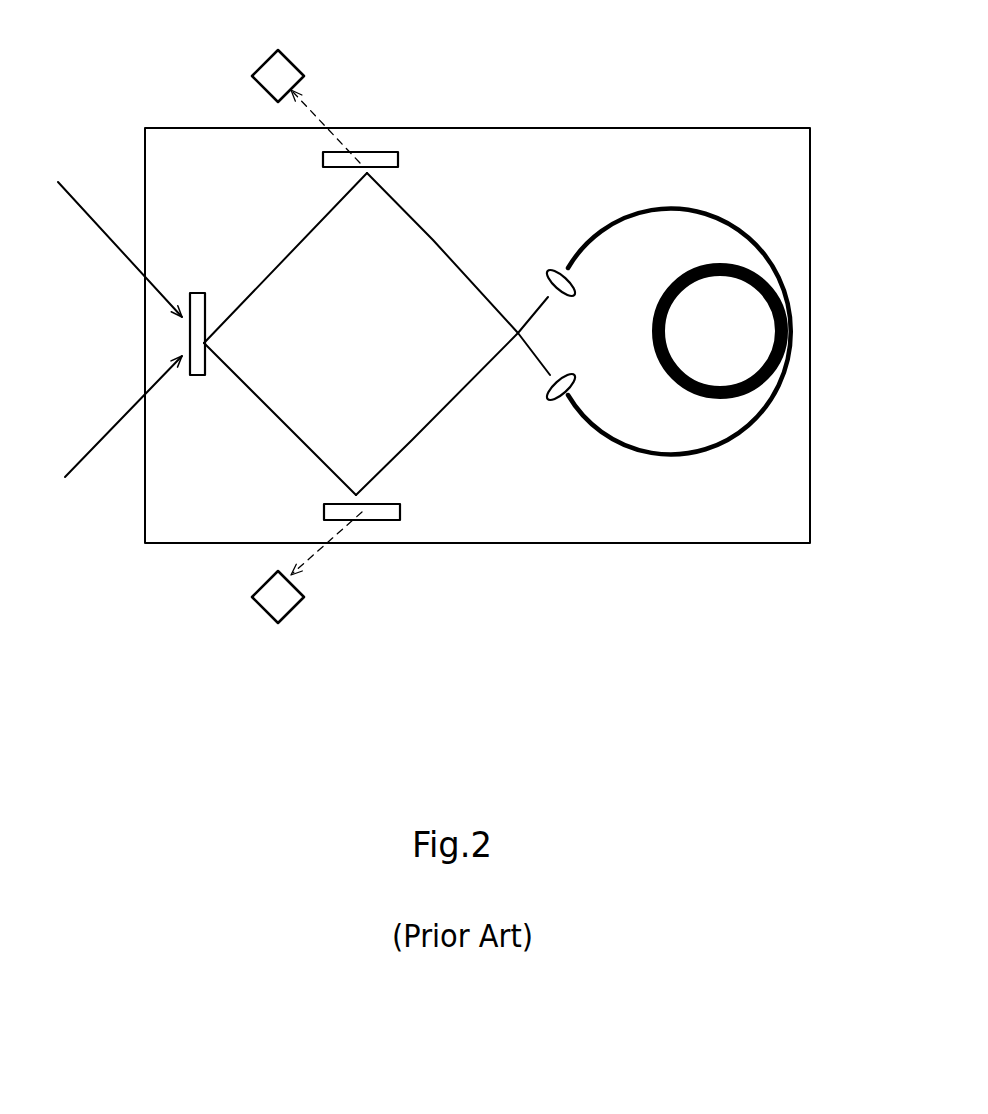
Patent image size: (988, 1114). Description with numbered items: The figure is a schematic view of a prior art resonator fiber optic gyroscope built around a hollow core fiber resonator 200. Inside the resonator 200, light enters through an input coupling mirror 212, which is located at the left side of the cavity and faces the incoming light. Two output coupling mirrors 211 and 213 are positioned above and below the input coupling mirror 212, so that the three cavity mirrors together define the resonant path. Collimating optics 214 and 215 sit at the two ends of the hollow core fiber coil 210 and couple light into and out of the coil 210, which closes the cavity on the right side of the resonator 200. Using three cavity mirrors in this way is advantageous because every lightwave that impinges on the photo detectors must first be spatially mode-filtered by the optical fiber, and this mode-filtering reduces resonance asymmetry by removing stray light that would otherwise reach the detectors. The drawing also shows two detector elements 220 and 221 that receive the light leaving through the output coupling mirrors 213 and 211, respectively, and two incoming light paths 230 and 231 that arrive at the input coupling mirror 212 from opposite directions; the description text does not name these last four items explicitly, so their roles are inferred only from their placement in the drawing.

The hollow core fiber resonator 200 is at (502, 128).
The hollow core fiber coil 210 is at (785, 305).
The output coupling mirror 211 is at (401, 512).
The input coupling mirror 212 is at (209, 297).
The output coupling mirror 213 is at (398, 162).
The collimating optics 214 is at (542, 256).
The collimating optics 215 is at (553, 403).
The detector 220 is at (273, 60).
The detector 221 is at (268, 610).
The input light beam 230 is at (78, 200).
The input light beam 231 is at (93, 450).